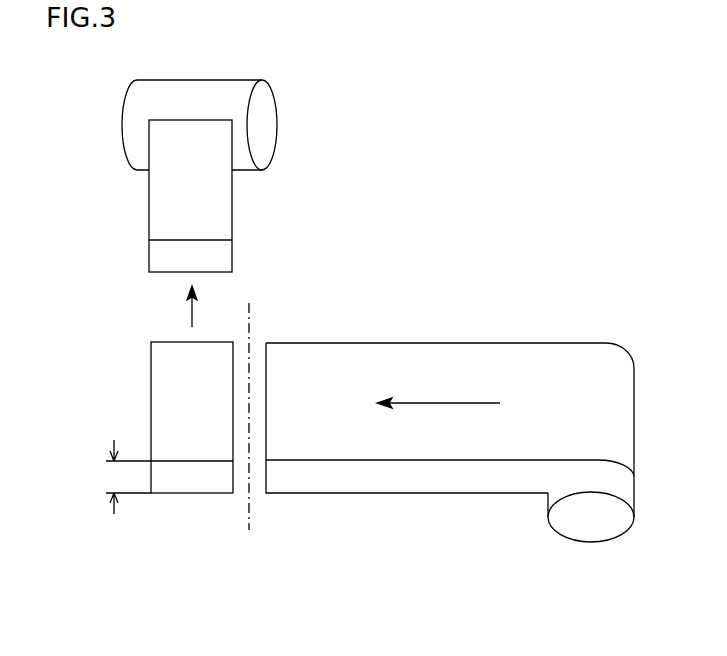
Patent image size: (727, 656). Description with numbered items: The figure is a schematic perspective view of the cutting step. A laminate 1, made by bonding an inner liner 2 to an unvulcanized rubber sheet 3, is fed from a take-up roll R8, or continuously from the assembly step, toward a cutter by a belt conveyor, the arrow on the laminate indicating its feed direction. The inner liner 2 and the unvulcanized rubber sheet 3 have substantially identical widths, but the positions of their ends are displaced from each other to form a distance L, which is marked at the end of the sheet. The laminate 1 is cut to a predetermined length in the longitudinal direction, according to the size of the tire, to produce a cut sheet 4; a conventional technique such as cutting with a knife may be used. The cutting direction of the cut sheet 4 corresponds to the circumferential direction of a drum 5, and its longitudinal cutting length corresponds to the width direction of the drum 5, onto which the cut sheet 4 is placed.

The laminate 1 is at (450, 400).
The inner liner 2 is at (436, 483).
The unvulcanized rubber sheet 3 is at (435, 350).
The cut sheet 4 is at (263, 219).
The drum 5 is at (265, 53).
The take-up roll R8 is at (592, 536).
The distance L is at (120, 477).